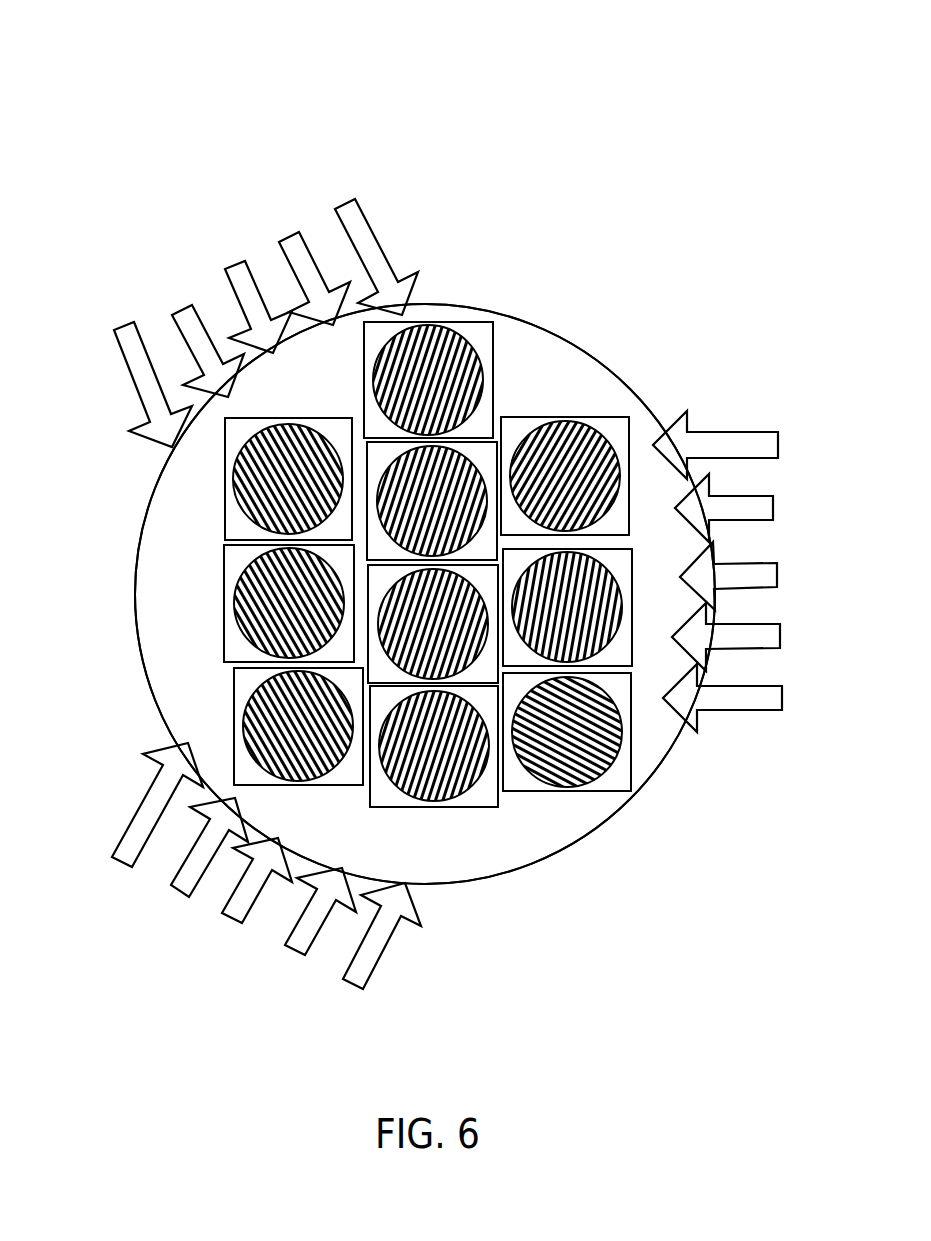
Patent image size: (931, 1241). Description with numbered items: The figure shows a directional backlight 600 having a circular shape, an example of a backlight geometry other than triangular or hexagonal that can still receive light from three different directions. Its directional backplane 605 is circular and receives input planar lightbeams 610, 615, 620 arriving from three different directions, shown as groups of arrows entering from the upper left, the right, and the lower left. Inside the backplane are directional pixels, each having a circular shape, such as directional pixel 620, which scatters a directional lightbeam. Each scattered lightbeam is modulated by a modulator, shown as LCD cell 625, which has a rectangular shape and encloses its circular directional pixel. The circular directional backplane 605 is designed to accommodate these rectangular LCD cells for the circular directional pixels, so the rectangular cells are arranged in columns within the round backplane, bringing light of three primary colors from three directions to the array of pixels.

The directional backlight 600 is at (431, 60).
The directional backplane 605 is at (530, 390).
The input planar lightbeam 610 is at (362, 240).
The input planar lightbeam 615 is at (735, 432).
The directional pixel 620 is at (402, 390).
The LCD cell 625 is at (480, 340).